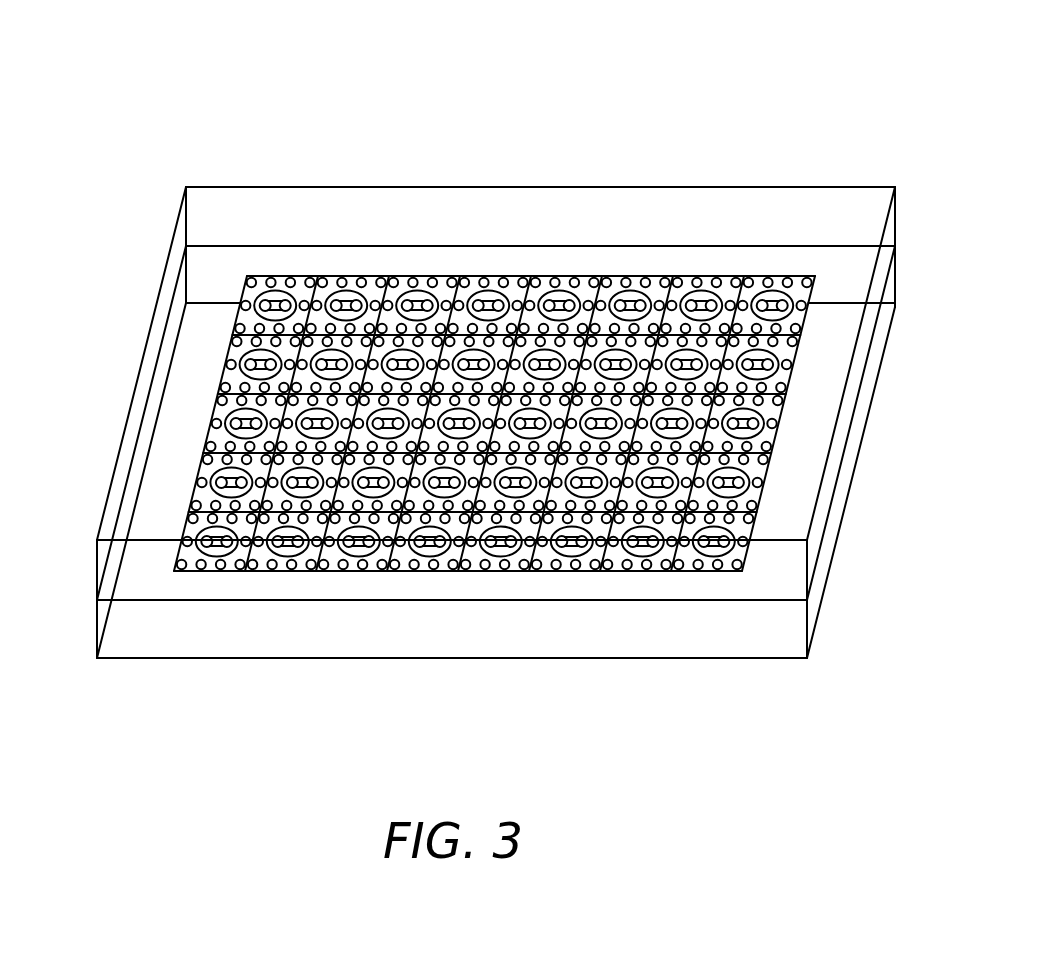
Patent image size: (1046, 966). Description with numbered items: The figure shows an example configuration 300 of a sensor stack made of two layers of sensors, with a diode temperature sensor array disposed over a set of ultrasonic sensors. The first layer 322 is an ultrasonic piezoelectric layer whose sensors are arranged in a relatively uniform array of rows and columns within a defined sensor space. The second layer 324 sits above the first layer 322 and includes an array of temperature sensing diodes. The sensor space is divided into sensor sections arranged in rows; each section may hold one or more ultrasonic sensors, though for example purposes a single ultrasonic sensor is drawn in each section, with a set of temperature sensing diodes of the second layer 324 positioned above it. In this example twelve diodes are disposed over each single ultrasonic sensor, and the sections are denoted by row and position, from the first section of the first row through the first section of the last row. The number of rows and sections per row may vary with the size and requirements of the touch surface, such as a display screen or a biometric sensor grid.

The example configuration 300 is at (470, 344).
The first layer 322 is at (793, 632).
The second layer 324 is at (793, 565).